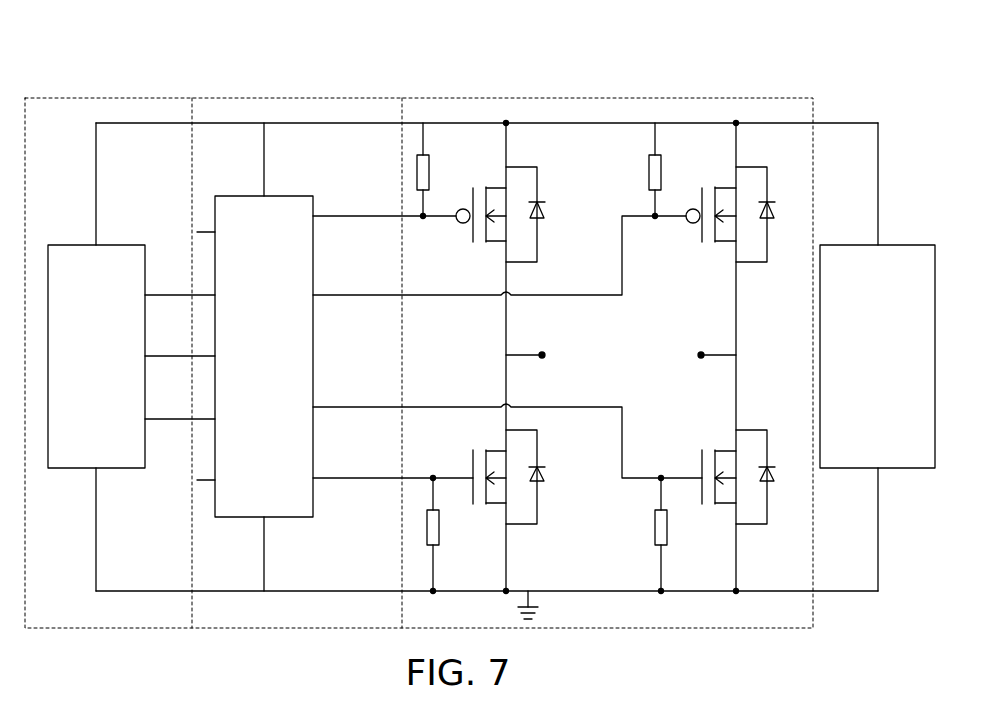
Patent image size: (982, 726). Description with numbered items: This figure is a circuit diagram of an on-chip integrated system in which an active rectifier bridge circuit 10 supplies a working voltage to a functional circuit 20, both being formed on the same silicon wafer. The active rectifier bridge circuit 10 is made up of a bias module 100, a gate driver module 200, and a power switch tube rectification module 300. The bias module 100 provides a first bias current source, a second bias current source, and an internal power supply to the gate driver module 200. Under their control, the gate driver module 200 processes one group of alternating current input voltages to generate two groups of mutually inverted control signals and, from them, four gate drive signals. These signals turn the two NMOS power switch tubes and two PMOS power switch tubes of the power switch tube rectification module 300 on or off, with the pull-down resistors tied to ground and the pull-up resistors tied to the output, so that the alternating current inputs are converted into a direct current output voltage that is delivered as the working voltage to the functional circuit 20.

The active rectifier bridge circuit 10 is at (125, 50).
The bias module 100 is at (107, 98).
The gate driver module 200 is at (296, 98).
The power switch tube rectification module 300 is at (600, 98).
The functional circuit 20 is at (912, 245).